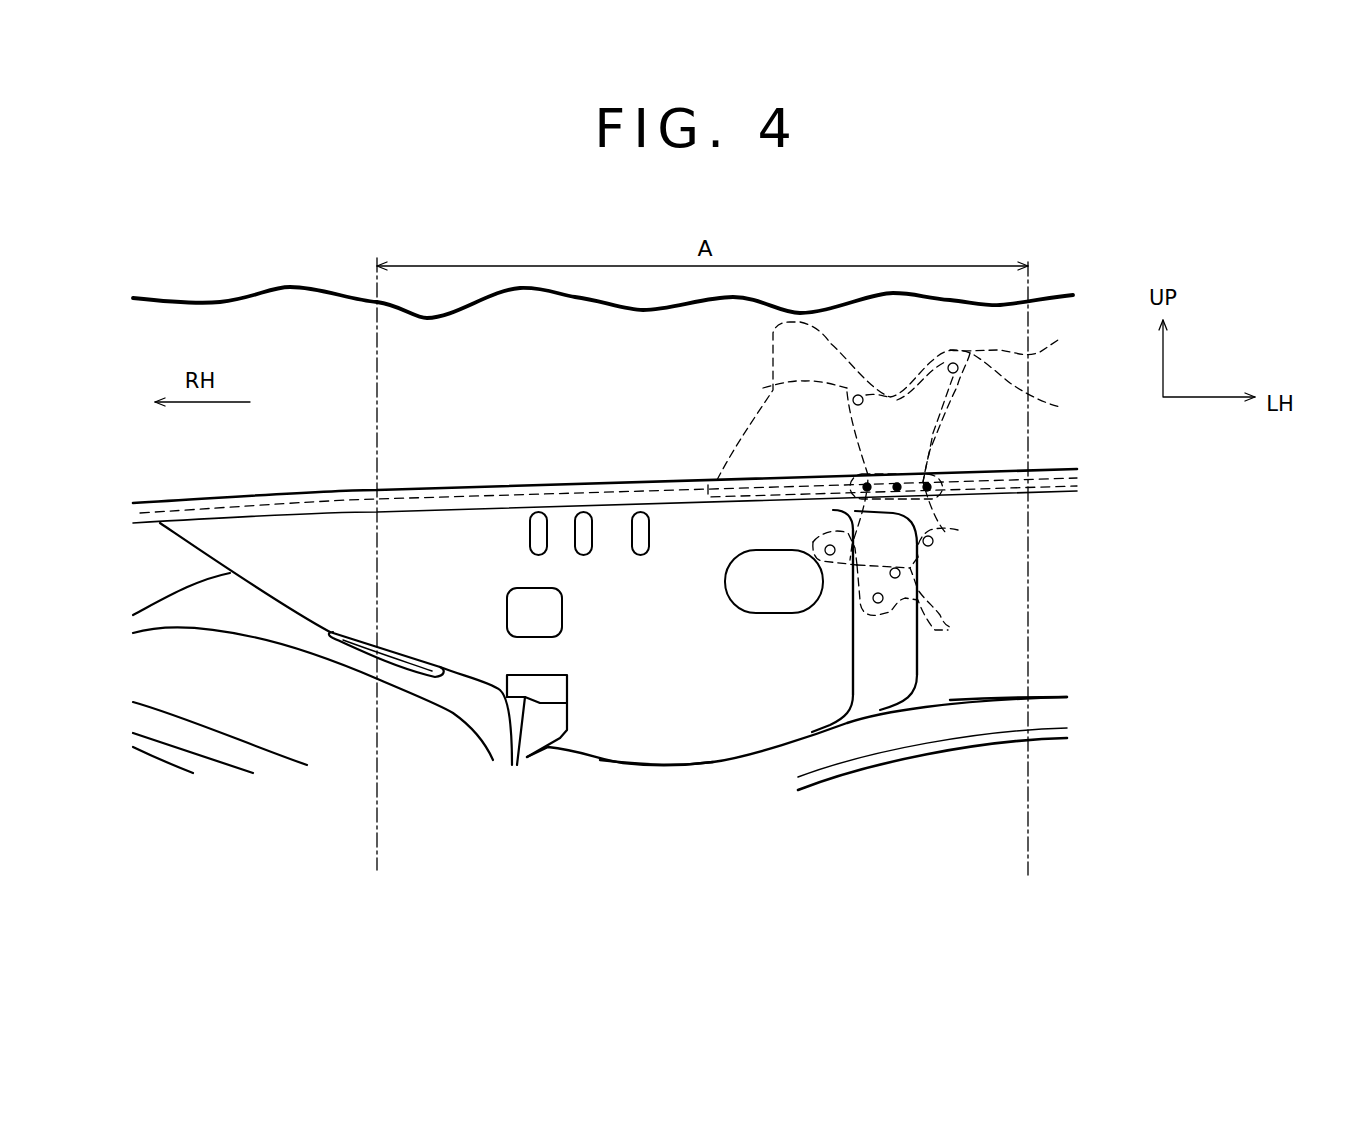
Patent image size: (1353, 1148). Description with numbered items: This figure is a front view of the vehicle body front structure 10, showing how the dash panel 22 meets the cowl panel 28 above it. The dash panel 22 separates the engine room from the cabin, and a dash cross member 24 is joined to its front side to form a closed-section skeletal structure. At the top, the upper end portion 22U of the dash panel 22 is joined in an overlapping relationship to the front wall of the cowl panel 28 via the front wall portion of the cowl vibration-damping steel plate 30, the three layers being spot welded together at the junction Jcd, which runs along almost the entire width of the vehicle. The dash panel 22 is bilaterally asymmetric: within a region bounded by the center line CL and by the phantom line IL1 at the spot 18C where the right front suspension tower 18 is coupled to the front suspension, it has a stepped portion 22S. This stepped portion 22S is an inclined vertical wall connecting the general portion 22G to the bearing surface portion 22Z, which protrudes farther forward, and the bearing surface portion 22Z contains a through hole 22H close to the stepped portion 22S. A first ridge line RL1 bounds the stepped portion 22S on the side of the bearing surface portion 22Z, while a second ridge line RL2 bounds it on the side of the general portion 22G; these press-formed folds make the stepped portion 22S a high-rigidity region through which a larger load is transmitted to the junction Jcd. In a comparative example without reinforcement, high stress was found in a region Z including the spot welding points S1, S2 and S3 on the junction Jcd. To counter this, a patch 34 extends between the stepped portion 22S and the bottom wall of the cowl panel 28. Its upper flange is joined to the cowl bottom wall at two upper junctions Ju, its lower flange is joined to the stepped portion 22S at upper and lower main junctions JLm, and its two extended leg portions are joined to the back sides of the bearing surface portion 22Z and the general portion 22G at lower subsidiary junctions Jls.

The vehicle body front structure 10 is at (1012, 514).
The front suspension tower 18 is at (312, 643).
The spot 18C is at (395, 635).
The dash panel 22 is at (623, 768).
The through hole 22H is at (774, 581).
The bearing surface portion 22Z is at (713, 745).
The stepped portion 22S is at (880, 690).
The general portion 22G is at (990, 688).
The upper end portion 22U is at (596, 498).
The junction Jcd is at (608, 495).
The dash cross member 24 is at (1048, 707).
The cowl panel 28 is at (523, 325).
The cowl vibration-damping steel plate 30 is at (812, 352).
The patch 34 is at (962, 397).
The phantom line IL1 is at (377, 262).
The center line CL is at (1028, 262).
The upper junction Ju is at (763, 388).
The lower subsidiary junction Jls is at (813, 542).
The lower main junction JLm is at (934, 601).
The first ridge line RL1 is at (853, 681).
The second ridge line RL2 is at (917, 642).
The spot welding point S1 is at (928, 485).
The spot welding point S2 is at (897, 483).
The spot welding point S3 is at (867, 483).
The region Z is at (823, 482).